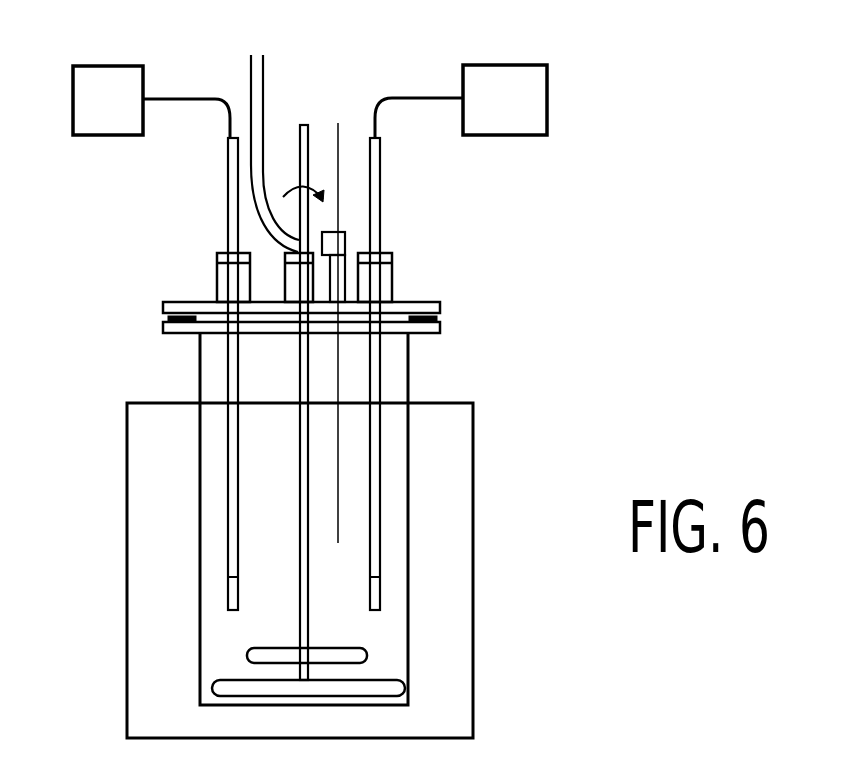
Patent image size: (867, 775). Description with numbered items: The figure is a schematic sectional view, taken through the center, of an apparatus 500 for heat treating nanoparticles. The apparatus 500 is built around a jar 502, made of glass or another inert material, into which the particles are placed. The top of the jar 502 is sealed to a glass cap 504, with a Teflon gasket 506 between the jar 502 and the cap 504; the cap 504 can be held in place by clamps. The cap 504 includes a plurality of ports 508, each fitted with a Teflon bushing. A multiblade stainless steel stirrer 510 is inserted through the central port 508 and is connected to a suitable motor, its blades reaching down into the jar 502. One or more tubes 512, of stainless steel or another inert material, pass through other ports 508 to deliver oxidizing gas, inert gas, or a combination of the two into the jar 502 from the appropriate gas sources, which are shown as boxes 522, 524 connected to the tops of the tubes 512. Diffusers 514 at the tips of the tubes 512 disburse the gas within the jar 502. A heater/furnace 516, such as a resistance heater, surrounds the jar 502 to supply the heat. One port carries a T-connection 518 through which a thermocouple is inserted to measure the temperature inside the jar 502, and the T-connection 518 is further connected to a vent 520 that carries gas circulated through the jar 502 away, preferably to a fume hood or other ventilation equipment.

The apparatus 500 is at (481, 375).
The jar 502 is at (198, 365).
The glass cap 504 is at (178, 302).
The gasket 506 is at (418, 328).
The ports 508 is at (283, 266).
The stirrer 510 is at (305, 635).
The tubes 512 is at (228, 153).
The diffusers 514 is at (232, 593).
The heater/furnace 516 is at (467, 648).
The T-connection 518 is at (348, 234).
The vent 520 is at (265, 76).
The pump 522 is at (80, 66).
The pump 524 is at (513, 65).